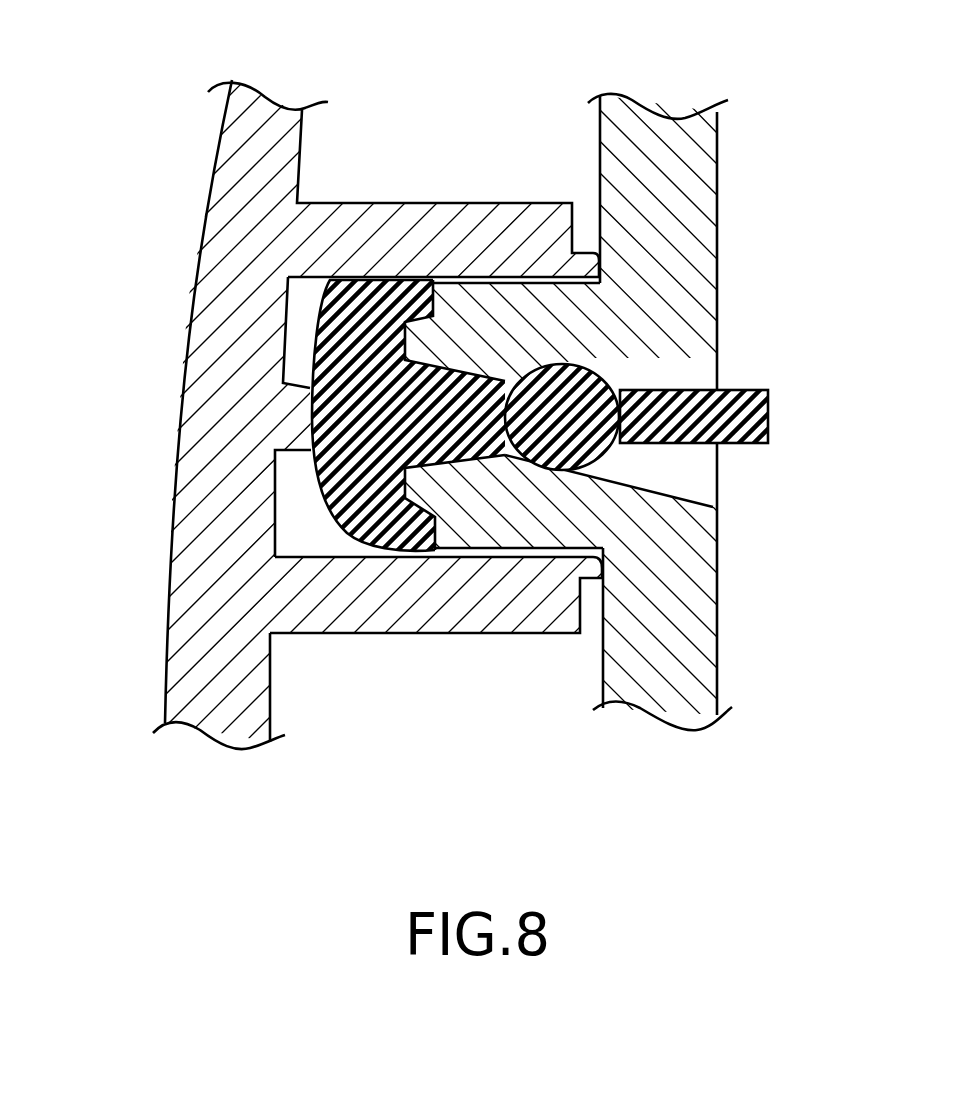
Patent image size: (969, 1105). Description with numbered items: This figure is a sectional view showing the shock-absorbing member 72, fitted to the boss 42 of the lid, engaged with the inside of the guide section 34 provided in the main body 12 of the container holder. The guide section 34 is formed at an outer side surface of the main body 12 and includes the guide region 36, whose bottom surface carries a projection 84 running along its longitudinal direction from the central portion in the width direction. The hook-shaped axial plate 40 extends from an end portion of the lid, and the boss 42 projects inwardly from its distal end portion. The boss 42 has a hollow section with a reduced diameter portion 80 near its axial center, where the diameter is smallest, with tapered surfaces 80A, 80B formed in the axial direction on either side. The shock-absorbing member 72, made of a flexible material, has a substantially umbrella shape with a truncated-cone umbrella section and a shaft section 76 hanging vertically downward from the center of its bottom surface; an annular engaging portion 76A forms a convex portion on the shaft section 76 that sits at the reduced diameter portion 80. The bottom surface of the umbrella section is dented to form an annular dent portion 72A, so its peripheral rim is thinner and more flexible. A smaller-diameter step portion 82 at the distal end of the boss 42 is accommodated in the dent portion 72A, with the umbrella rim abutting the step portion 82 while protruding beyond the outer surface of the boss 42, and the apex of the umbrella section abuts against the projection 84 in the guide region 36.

The main body 12 is at (207, 452).
The guide section 34 is at (300, 311).
The guide region 36 is at (308, 280).
The axial plate 40 is at (673, 667).
The boss 42 is at (508, 510).
The shock-absorbing member 72 is at (333, 375).
The dent portion 72A is at (405, 347).
The shaft section 76 is at (673, 390).
The engaging portion 76A is at (583, 367).
The reduced diameter portion 80 is at (500, 382).
The tapered surface 80A is at (447, 373).
The tapered surface 80B is at (647, 487).
The step portion 82 is at (370, 530).
The projection 84 is at (302, 440).